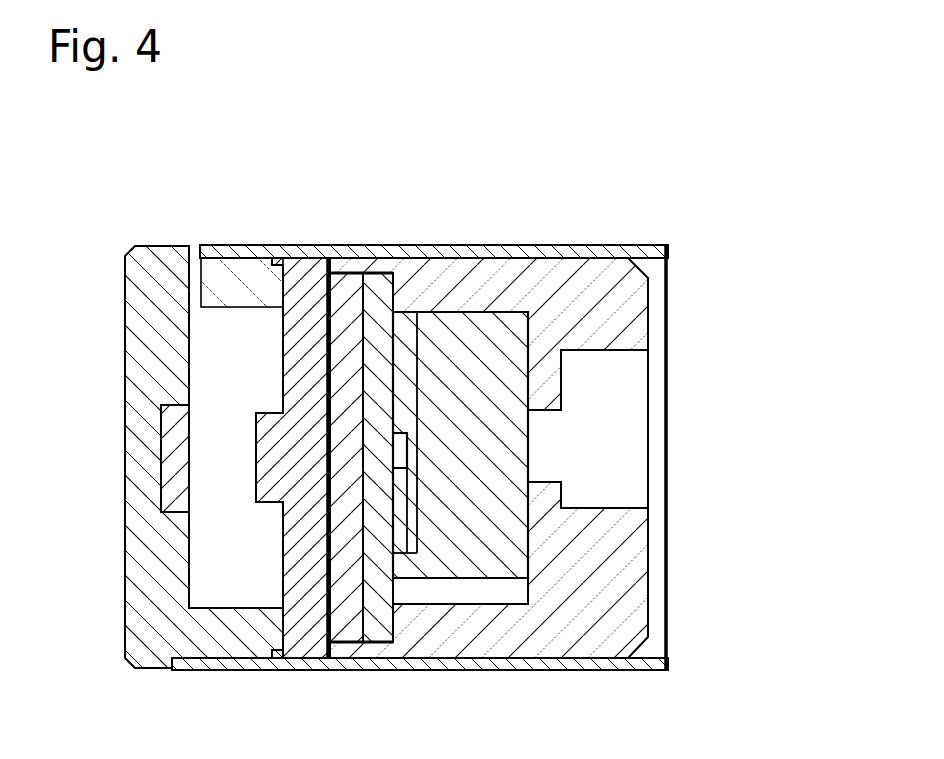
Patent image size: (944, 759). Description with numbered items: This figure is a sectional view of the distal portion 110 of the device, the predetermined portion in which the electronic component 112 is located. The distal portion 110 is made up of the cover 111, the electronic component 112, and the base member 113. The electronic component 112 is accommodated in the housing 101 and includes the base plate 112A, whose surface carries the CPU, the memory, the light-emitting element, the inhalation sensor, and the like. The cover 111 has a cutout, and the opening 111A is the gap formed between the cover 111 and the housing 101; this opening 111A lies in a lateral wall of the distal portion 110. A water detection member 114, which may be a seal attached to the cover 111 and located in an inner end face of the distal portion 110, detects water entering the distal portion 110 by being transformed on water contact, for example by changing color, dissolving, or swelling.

The housing 101 is at (293, 247).
The distal portion 110 is at (411, 227).
The cover 111 is at (222, 645).
The opening 111A is at (198, 247).
The electronic component 112 is at (440, 537).
The base plate 112A is at (345, 618).
The base member 113 is at (513, 636).
The water detection member 114 is at (160, 475).